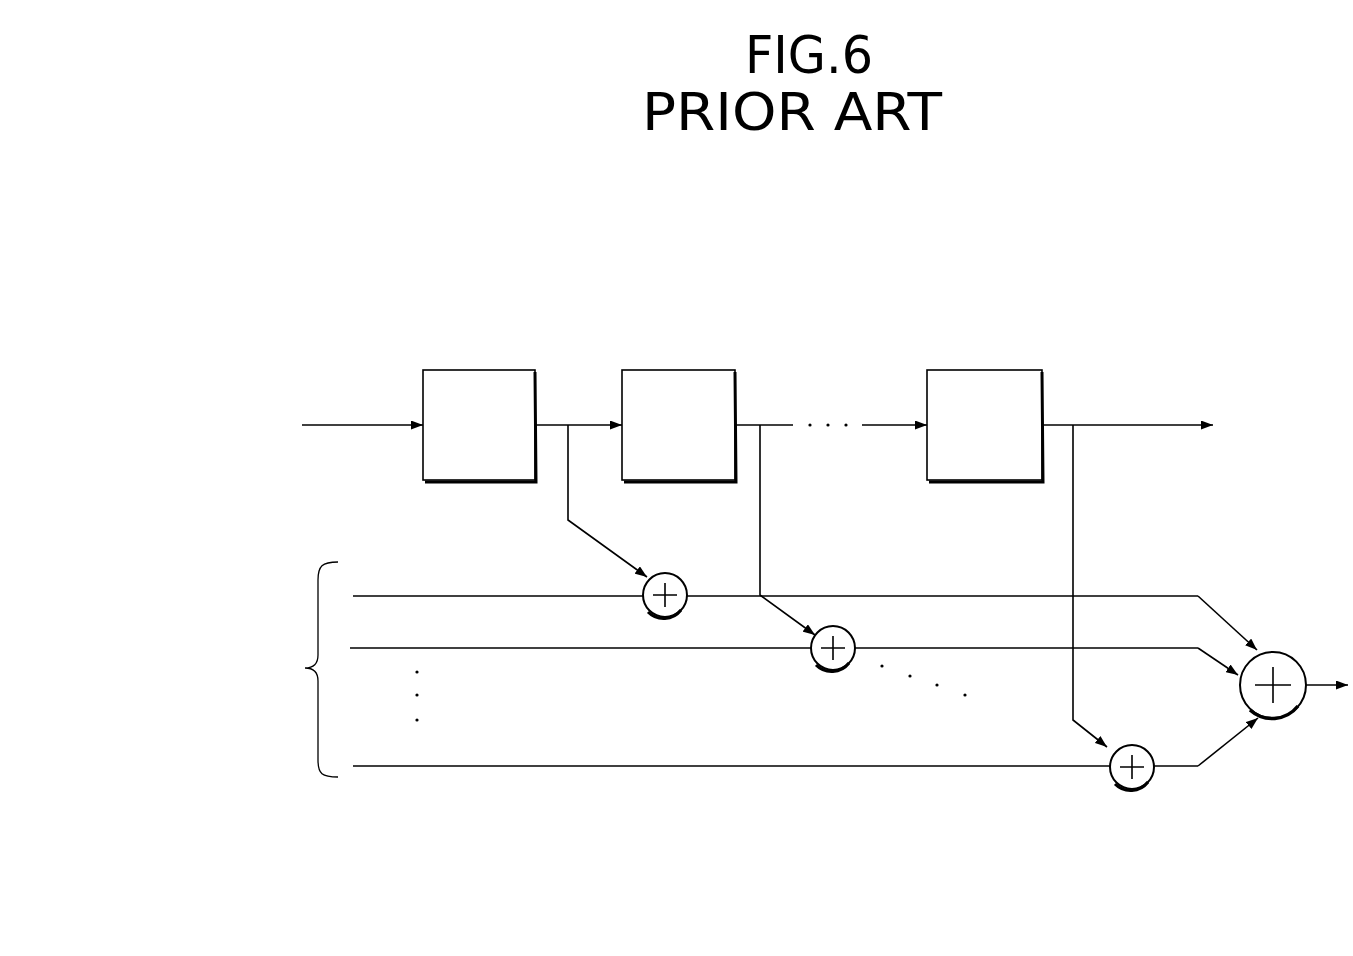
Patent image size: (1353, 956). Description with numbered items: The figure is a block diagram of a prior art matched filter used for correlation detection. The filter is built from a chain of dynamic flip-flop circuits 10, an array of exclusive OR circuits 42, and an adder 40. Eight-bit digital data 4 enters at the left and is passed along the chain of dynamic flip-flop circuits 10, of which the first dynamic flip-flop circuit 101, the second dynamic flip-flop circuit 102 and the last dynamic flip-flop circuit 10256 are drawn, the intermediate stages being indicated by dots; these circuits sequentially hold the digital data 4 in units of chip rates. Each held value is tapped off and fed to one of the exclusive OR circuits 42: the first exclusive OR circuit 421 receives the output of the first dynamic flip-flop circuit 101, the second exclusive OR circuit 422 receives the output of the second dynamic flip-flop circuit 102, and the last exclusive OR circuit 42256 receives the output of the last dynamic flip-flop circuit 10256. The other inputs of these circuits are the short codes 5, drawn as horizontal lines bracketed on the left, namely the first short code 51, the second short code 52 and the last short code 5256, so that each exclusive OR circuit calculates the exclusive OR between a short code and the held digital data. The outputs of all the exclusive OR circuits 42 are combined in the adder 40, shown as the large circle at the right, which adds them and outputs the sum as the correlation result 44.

The digital data 4 is at (345, 424).
The dynamic flip-flop circuits 10 is at (818, 377).
The dynamic flip-flop circuit 101 is at (473, 370).
The dynamic flip-flop circuit 102 is at (670, 370).
The dynamic flip-flop circuit 10256 is at (983, 370).
The short codes 5 is at (659, 639).
The short code 51 is at (400, 596).
The short code 52 is at (374, 650).
The short code 5256 is at (453, 766).
The exclusive OR circuits 42 is at (962, 686).
The exclusive OR circuit 421 is at (666, 573).
The exclusive OR circuit 422 is at (834, 670).
The exclusive OR circuit 42256 is at (1140, 790).
The adder 40 is at (1269, 651).
The correlation result 44 is at (1315, 684).